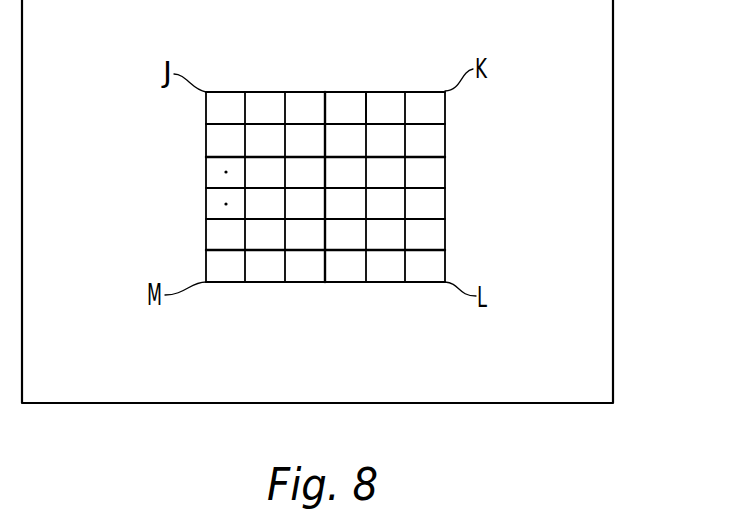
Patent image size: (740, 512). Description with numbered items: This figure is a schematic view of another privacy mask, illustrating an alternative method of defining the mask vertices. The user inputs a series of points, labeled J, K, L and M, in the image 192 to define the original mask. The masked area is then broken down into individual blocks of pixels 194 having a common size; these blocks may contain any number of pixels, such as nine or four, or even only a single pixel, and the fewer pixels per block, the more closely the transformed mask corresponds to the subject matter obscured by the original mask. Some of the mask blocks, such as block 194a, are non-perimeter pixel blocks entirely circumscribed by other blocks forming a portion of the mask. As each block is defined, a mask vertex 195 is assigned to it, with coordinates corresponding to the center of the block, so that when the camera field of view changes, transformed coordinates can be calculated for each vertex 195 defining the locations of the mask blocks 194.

The image 192 is at (600, 75).
The blocks of pixels 194 is at (226, 97).
The block 194a is at (347, 133).
The mask vertex 195 is at (226, 172).